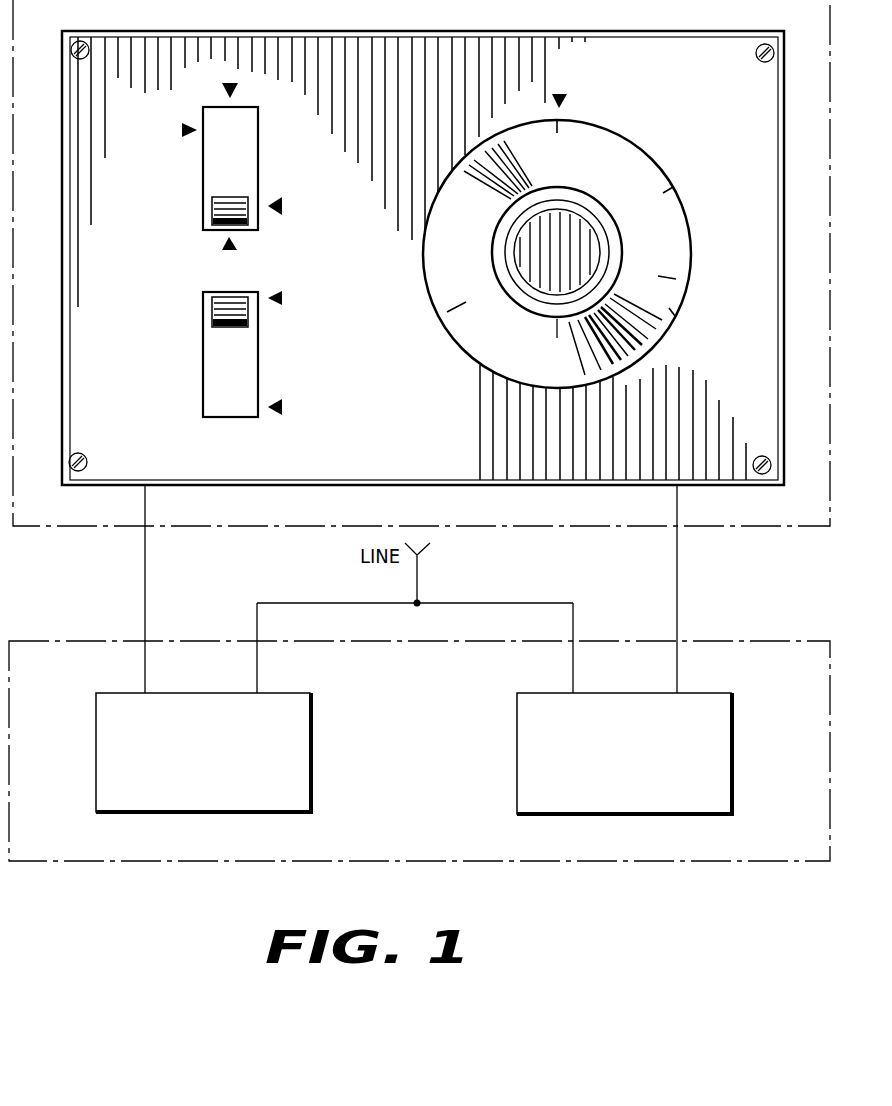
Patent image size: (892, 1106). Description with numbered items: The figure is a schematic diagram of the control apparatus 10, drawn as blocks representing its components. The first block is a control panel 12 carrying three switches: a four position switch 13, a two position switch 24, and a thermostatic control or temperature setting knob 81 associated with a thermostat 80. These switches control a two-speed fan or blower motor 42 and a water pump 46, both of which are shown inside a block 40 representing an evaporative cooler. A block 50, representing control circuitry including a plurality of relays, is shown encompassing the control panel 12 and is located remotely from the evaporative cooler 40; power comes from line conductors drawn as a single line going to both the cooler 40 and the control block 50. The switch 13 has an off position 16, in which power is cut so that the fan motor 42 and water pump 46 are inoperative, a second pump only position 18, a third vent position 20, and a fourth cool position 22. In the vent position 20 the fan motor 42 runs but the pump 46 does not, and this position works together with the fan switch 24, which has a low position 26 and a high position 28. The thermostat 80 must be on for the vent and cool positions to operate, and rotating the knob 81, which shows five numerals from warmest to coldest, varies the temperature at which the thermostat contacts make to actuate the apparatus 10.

The control apparatus 10 is at (155, 882).
The control panel 12 is at (737, 37).
The four position switch 13 is at (213, 208).
The off position 16 is at (222, 243).
The pump only position 18 is at (276, 198).
The vent position 20 is at (190, 138).
The cool position 22 is at (236, 92).
The two position switch 24 is at (212, 310).
The low position 26 is at (276, 404).
The high position 28 is at (282, 303).
The evaporative cooler 40 is at (788, 866).
The blower motor 42 is at (313, 713).
The water pump 46 is at (517, 720).
The control block 50 is at (769, 537).
The thermostat 80 is at (452, 350).
The temperature setting knob 81 is at (630, 148).